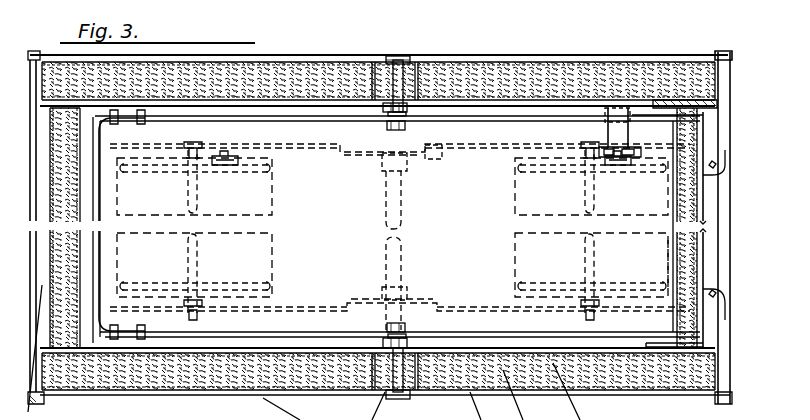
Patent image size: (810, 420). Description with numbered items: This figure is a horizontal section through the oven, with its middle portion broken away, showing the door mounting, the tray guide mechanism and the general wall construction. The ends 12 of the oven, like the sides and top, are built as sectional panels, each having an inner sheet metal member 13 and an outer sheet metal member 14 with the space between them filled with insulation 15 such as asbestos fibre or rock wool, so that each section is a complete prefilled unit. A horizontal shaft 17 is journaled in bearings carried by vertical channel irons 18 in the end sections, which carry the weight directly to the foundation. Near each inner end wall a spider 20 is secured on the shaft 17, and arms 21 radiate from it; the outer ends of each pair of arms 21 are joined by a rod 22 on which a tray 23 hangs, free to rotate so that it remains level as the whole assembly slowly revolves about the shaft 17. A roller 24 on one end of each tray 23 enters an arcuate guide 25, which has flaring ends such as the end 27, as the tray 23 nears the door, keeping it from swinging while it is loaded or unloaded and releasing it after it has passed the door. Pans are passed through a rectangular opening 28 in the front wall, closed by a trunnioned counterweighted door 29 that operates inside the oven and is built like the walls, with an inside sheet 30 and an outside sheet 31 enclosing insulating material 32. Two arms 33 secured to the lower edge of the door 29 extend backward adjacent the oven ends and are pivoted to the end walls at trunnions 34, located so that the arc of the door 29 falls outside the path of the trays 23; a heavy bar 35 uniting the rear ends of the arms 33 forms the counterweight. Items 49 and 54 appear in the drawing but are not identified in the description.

The end 12 is at (268, 57).
The inner sheet metal member 13 is at (503, 99).
The outer sheet metal member 14 is at (470, 65).
The insulation 15 is at (550, 80).
The horizontal shaft 17 is at (399, 208).
The vertical channel iron 18 is at (409, 95).
The spider 20 is at (423, 154).
The arm 21 is at (338, 152).
The rod 22 is at (197, 261).
The tray 23 is at (270, 258).
The roller 24 is at (227, 160).
The arcuate guide 25 is at (641, 133).
The flaring end 27 is at (606, 148).
The rectangular opening 28 is at (745, 207).
The door 29 is at (662, 258).
The inside sheet 30 is at (677, 314).
The outside sheet 31 is at (698, 271).
The insulating material 32 is at (698, 322).
The arm 33 is at (512, 120).
The trunnion 34 is at (385, 119).
The counterweight bar 35 is at (100, 270).
The base 49 is at (243, 409).
The side panel 54 is at (40, 352).